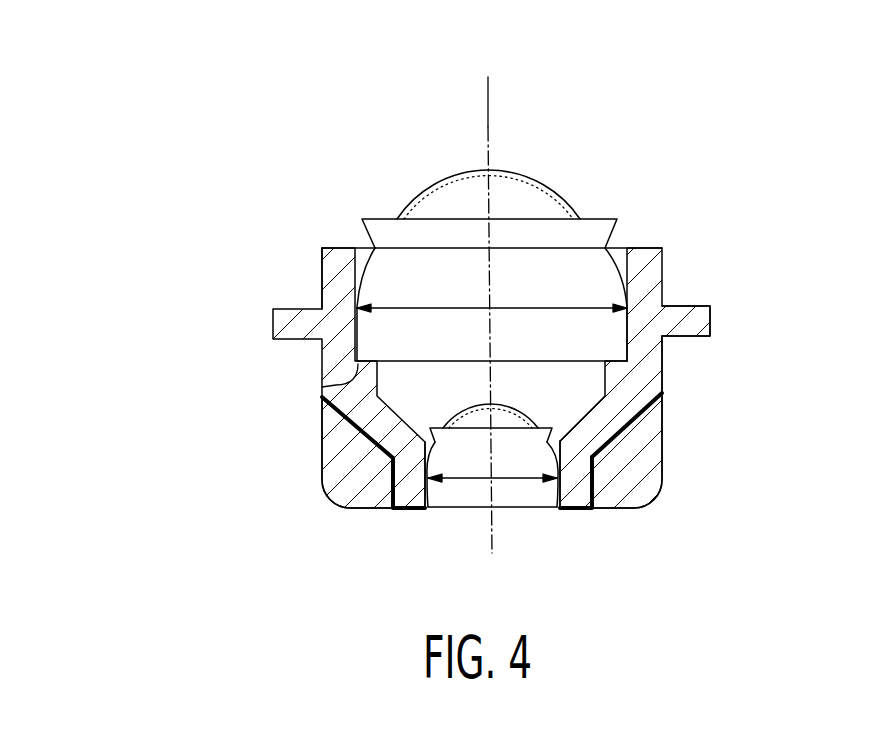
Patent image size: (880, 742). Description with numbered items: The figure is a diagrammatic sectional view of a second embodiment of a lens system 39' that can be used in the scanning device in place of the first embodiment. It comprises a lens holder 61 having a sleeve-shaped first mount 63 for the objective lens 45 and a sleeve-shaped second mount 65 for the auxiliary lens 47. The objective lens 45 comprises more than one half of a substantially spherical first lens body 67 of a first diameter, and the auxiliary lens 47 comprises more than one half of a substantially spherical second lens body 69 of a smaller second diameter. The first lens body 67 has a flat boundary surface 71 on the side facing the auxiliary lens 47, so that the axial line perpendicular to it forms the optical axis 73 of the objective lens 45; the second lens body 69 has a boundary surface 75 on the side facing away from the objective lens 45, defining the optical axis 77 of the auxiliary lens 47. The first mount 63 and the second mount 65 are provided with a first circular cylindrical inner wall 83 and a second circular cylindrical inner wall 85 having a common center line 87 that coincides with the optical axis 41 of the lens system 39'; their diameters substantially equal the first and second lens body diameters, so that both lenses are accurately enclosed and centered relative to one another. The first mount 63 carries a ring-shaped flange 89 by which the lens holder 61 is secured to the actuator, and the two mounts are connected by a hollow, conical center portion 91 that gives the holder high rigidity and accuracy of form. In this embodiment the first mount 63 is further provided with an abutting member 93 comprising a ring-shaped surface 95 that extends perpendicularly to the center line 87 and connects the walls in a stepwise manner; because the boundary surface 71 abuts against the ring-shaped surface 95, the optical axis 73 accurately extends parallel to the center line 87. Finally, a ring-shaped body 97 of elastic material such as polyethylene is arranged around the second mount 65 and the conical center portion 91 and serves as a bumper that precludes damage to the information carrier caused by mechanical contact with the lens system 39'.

The lens system 39' is at (411, 322).
The optical axis of the lens system 41 is at (530, 314).
The center line 87 is at (490, 85).
The objective lens 45 is at (529, 288).
The auxiliary lens 47 is at (492, 486).
The lens holder 61 is at (322, 362).
The first mount 63 is at (335, 293).
The second mount 65 is at (410, 487).
The first lens body 67 is at (358, 250).
The second lens body 69 is at (380, 455).
The boundary surface 71 is at (541, 363).
The optical axis of the objective lens 73 is at (507, 331).
The boundary surface 75 is at (448, 509).
The optical axis of the auxiliary lens 77 is at (490, 488).
The first circular cylindrical inner wall 83 is at (645, 349).
The second circular cylindrical inner wall 85 is at (598, 457).
The ring-shaped flange 89 is at (697, 319).
The conical center portion 91 is at (610, 408).
The abutting member 93 is at (304, 411).
The ring-shaped surface 95 is at (322, 387).
The ring-shaped body 97 is at (630, 485).